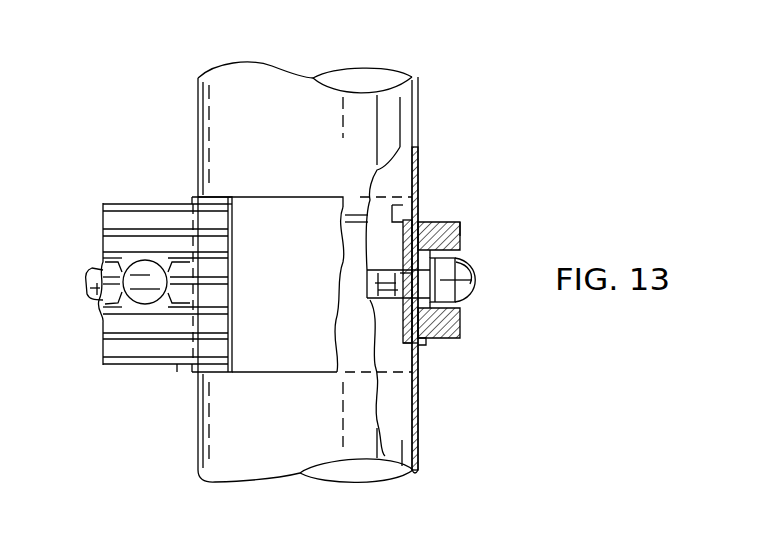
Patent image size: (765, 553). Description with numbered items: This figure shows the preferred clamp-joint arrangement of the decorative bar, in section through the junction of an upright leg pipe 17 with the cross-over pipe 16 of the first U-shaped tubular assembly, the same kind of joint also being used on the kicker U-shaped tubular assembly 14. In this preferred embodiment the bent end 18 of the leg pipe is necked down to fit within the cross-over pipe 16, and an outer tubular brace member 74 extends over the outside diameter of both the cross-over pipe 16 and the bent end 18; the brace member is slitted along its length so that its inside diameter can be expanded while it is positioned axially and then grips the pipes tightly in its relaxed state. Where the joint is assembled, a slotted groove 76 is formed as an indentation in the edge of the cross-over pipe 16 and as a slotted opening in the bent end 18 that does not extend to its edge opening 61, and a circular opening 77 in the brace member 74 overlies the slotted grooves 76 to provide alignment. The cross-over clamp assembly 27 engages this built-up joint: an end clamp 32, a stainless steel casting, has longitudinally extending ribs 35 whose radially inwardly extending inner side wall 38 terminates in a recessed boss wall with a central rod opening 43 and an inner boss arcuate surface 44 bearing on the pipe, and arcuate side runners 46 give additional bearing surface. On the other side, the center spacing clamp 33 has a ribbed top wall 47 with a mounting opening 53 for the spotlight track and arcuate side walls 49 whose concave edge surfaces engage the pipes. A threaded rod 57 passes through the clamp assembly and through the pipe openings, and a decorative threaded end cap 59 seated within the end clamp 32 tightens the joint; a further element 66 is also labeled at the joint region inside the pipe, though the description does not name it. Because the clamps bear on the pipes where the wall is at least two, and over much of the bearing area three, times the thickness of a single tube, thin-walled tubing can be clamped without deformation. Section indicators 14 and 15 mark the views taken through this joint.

The kicker U-shaped tubular assembly 14 is at (395, 50).
The section line 15- 15 is at (190, 395).
The cross-over pipe 16 is at (420, 410).
The upright leg pipe 17 is at (420, 107).
The bent end 18 is at (419, 158).
The cross-over clamp assembly 27 is at (177, 370).
The end clamp 32 is at (470, 238).
The center spacing clamp 33 is at (128, 206).
The longitudinally extending rib 35 is at (462, 258).
The inner side wall 38 is at (456, 322).
The central rod opening 43 is at (462, 283).
The inner boss arcuate surface 44 is at (396, 312).
The side runner 46 is at (470, 223).
The ribbed top wall 47 is at (158, 210).
The arcuate side wall 49 is at (145, 204).
The mounting opening 53 is at (140, 264).
The threaded rod 57 is at (95, 292).
The decorative threaded end cap 59 is at (465, 273).
The edge opening 61 is at (410, 333).
The nut 66 is at (358, 215).
The outer tubular brace member 74 is at (420, 208).
The slotted groove 76 is at (410, 258).
The circular opening 77 is at (455, 298).